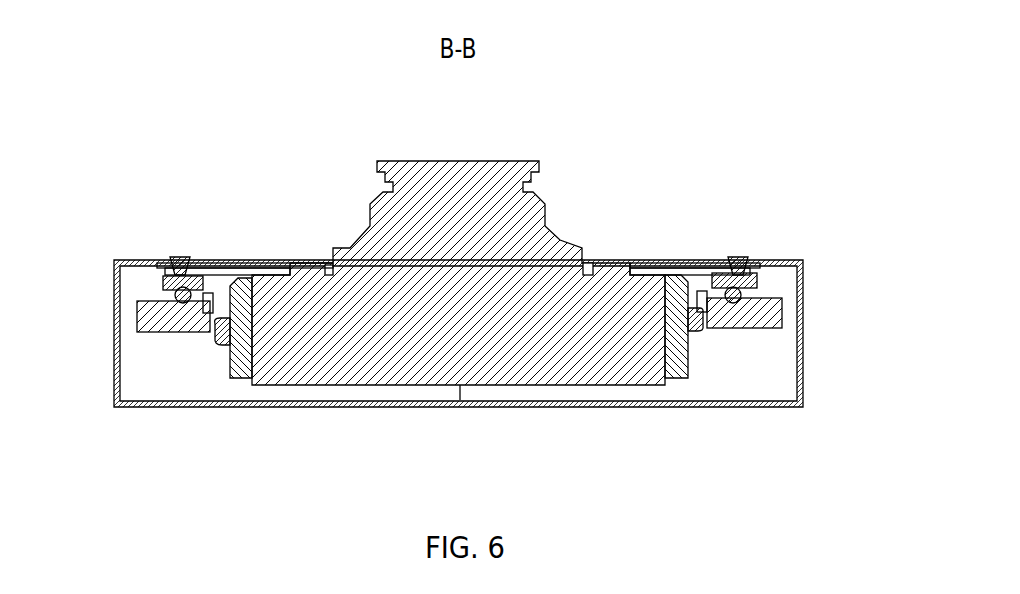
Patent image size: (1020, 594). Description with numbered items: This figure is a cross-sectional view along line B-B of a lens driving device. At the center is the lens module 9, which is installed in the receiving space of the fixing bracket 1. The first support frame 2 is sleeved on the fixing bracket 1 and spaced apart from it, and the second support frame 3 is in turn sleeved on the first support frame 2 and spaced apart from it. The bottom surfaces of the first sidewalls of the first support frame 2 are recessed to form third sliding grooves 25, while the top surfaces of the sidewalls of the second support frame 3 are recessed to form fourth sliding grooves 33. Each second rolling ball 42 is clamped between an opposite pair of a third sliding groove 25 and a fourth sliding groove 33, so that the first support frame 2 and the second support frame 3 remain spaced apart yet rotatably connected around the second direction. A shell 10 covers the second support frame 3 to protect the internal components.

The fixing bracket 1 is at (234, 366).
The first support frame 2 is at (178, 265).
The second support frame 3 is at (173, 325).
The lens module 9 is at (393, 228).
The shell 10 is at (803, 322).
The third sliding grooves 25 is at (168, 277).
The fourth sliding grooves 33 is at (175, 305).
The second rolling balls 42 is at (178, 292).